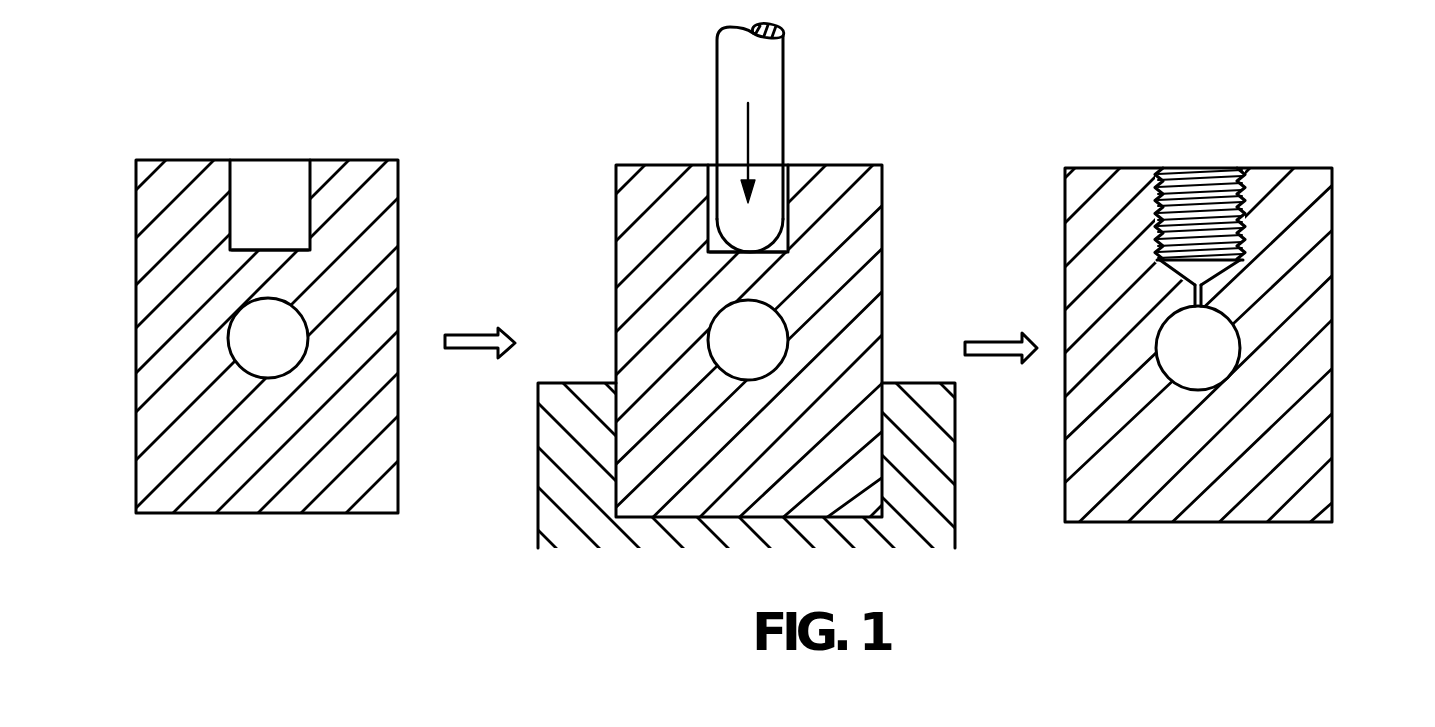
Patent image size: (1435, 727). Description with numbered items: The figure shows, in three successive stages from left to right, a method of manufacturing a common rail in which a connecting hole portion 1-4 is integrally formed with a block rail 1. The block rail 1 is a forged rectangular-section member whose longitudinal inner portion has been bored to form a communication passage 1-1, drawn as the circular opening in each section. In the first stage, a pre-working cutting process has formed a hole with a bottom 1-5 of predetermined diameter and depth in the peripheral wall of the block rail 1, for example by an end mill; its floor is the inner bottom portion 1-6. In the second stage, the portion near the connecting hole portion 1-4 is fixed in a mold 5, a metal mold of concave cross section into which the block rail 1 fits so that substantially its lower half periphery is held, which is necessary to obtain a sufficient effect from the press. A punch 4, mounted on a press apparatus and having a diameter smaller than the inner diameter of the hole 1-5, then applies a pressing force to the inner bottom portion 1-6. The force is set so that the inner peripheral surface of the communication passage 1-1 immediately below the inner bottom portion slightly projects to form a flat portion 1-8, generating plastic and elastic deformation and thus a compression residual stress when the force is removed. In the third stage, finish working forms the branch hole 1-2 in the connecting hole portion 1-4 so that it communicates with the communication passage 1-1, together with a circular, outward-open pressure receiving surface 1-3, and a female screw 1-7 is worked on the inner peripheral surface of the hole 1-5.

The block rail 1 is at (250, 500).
The communication passage 1-1 is at (297, 318).
The branch hole 1-2 is at (1195, 308).
The pressure receiving surface 1-3 is at (1213, 272).
The connecting hole portion 1-4 is at (1208, 162).
The hole with a bottom 1-5 is at (310, 170).
The inner bottom portion 1-6 is at (253, 248).
The female screw 1-7 is at (1230, 190).
The flat portion 1-8 is at (1222, 308).
The punch 4 is at (765, 72).
The mold 5 is at (590, 385).